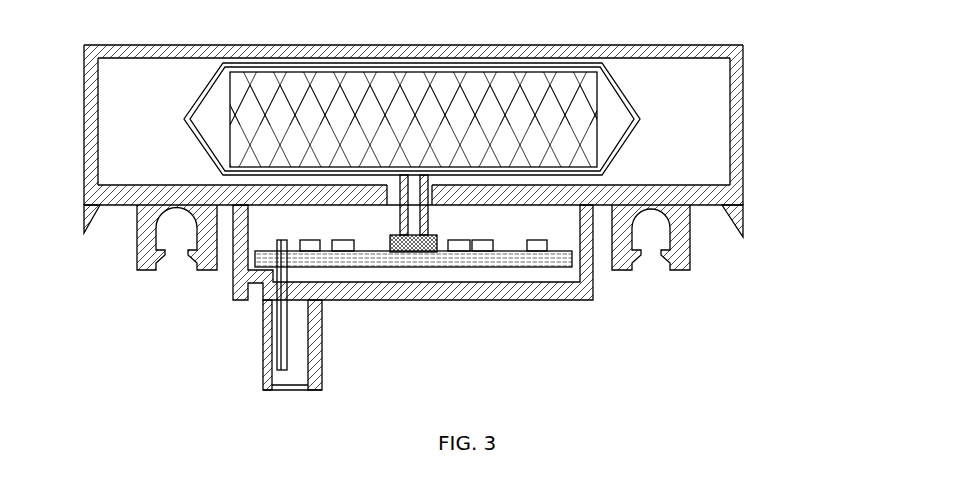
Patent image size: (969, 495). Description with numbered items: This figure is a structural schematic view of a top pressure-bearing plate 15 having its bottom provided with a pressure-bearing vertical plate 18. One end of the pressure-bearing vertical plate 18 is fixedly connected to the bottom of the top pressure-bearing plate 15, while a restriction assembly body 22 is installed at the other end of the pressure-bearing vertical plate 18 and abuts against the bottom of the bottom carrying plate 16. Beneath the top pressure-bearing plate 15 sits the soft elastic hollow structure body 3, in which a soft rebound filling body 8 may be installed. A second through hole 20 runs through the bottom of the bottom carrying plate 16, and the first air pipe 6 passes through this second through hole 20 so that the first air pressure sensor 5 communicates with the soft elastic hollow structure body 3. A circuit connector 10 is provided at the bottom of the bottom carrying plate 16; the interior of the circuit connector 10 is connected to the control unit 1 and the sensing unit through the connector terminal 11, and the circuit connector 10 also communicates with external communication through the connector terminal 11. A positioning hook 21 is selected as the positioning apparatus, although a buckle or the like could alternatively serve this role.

The control unit 1 is at (600, 283).
The soft elastic hollow structure body 3 is at (615, 82).
The first air pressure sensor 5 is at (435, 253).
The first air pipe 6 is at (418, 208).
The soft rebound filling body 8 is at (620, 119).
The circuit connector 10 is at (318, 310).
The connector terminal 11 is at (288, 345).
The top pressure-bearing plate 15 is at (600, 48).
The bottom carrying plate 16 is at (283, 210).
The pressure-bearing vertical plate 18 is at (742, 146).
The second through hole 20 is at (393, 203).
The positioning hook 21 is at (687, 242).
The restriction assembly body 22 is at (742, 217).